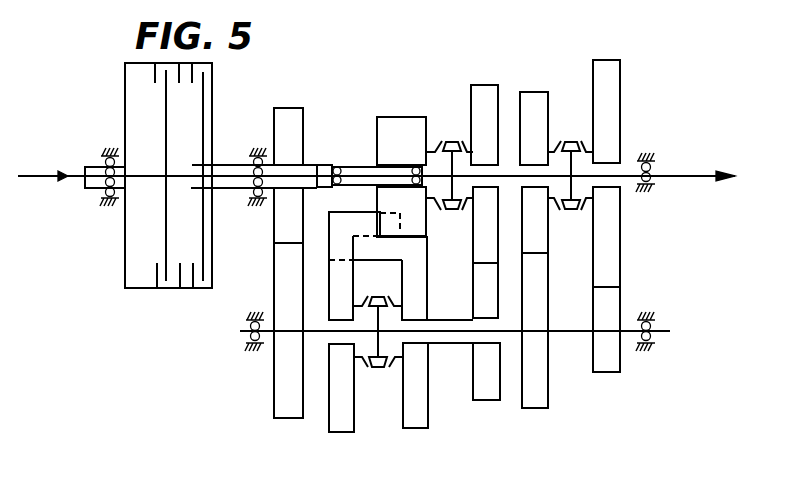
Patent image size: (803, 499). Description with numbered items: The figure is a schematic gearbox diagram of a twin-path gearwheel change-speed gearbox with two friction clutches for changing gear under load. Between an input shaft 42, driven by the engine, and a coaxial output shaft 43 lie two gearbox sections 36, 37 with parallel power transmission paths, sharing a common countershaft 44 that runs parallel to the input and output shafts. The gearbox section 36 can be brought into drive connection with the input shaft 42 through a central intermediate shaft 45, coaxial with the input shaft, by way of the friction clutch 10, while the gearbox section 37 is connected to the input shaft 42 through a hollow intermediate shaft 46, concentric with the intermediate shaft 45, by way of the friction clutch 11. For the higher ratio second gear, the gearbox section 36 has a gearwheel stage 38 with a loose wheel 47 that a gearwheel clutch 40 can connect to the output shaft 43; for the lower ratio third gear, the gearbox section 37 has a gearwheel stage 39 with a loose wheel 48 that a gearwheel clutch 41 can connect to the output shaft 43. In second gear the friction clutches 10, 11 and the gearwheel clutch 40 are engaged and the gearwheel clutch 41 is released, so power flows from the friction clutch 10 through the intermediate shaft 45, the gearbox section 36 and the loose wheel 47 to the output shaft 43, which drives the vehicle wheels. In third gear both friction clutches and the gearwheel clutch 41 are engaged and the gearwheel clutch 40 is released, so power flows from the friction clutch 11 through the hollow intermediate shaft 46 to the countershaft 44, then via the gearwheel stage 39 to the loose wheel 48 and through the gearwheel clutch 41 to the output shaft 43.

The friction clutch 10 is at (148, 94).
The friction clutch 11 is at (209, 90).
The input shaft 42 is at (76, 184).
The output shaft 43 is at (678, 170).
The hollow intermediate shaft 46 is at (220, 192).
The central intermediate shaft 45 is at (308, 170).
The gearbox section 36 is at (405, 106).
The gearwheel clutch 40 is at (449, 128).
The loose wheel 47 is at (485, 93).
The loose wheel 48 is at (530, 90).
The gearwheel clutch 41 is at (572, 127).
The countershaft 44 is at (577, 328).
The gearwheel stage 38 is at (484, 410).
The gearwheel stage 39 is at (540, 420).
The gearbox section 37 is at (578, 400).